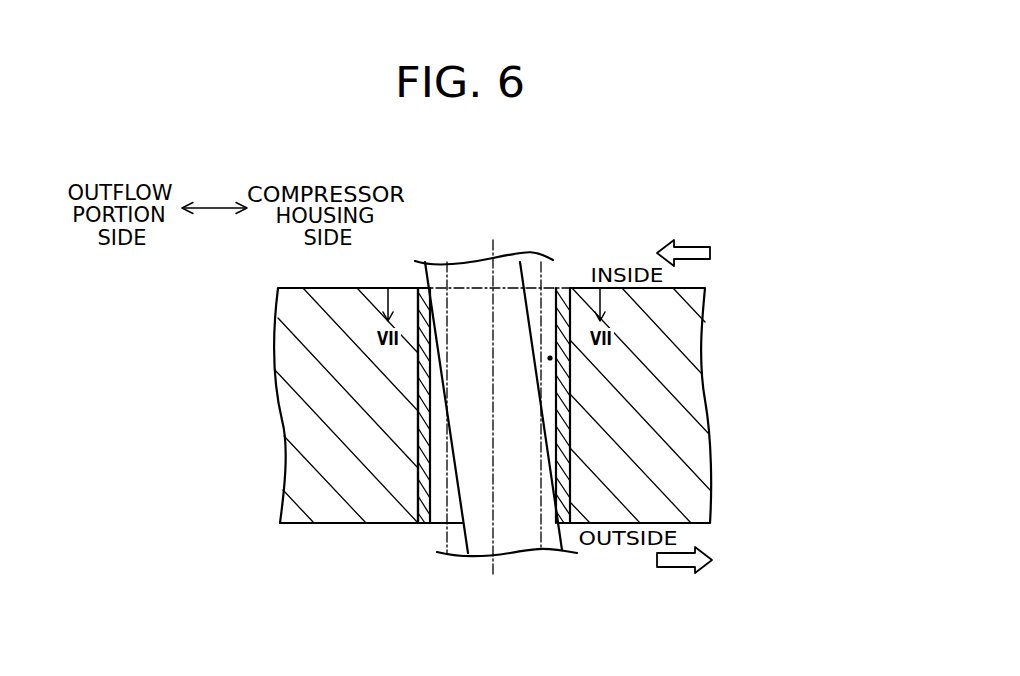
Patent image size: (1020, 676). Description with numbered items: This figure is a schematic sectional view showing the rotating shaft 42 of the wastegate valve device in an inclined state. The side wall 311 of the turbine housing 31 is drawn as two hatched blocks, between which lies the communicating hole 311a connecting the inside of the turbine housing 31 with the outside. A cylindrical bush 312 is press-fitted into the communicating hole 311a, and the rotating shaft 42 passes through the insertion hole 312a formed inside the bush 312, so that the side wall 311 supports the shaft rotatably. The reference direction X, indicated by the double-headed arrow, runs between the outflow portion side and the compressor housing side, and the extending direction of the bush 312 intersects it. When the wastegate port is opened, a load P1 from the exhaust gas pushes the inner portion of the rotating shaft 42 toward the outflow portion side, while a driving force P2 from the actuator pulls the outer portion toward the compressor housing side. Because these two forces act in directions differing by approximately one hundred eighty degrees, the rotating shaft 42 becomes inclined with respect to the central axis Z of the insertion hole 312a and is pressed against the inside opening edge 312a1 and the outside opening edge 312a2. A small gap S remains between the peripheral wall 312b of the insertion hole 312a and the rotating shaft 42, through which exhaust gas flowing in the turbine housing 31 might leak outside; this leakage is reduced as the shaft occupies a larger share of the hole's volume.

The turbine housing 31 is at (430, 405).
The side wall 311 is at (180, 415).
The communicating hole 311a is at (428, 381).
The bush 312 is at (468, 411).
The insertion hole 312a is at (468, 411).
The inside opening edge 312a1 is at (552, 288).
The outside opening edge 312a2 is at (452, 527).
The peripheral wall 312b is at (556, 412).
The rotating shaft 42 is at (463, 507).
The gap S is at (565, 365).
The central axis Z is at (493, 247).
The reference direction X is at (214, 206).
The load P1 is at (693, 247).
The driving force P2 is at (677, 568).